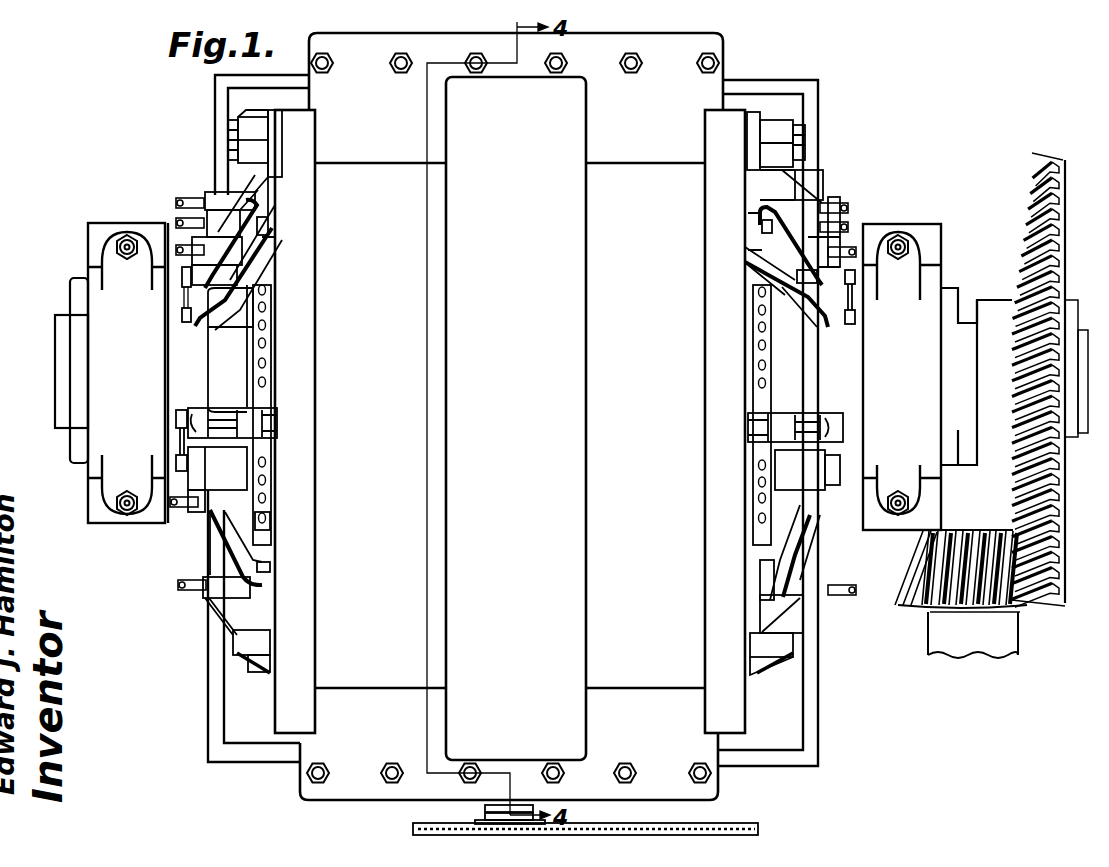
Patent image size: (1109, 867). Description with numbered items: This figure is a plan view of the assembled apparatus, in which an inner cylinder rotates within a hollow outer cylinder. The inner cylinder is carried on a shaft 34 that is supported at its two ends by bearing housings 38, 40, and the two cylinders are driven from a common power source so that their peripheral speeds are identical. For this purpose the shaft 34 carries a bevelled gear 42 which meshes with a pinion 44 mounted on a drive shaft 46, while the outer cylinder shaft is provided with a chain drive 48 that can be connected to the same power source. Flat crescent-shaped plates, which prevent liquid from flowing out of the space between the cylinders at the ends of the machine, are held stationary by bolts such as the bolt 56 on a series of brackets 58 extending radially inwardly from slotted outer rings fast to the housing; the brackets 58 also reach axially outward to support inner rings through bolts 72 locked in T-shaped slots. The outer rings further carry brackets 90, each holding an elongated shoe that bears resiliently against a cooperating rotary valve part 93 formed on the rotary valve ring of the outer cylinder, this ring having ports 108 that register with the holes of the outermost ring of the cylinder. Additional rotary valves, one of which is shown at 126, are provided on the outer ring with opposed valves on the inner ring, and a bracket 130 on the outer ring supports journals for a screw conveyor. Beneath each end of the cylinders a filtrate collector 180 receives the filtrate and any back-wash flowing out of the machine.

The shaft 34 is at (63, 375).
The bearing housing 38 is at (97, 468).
The bearing housing 40 is at (930, 282).
The bevelled gear 42 is at (1048, 572).
The pinion 44 is at (913, 587).
The drive shaft 46 is at (975, 640).
The chain drive 48 is at (733, 832).
The bolt 56 is at (182, 277).
The bracket 58 is at (272, 198).
The bolt 72 is at (182, 318).
The bracket 90 is at (253, 132).
The rotary valve part 93 is at (258, 336).
The ports 108 is at (258, 382).
The rotary valve 126 is at (203, 592).
The bracket 130 is at (232, 534).
The filtrate collector 180 is at (208, 688).